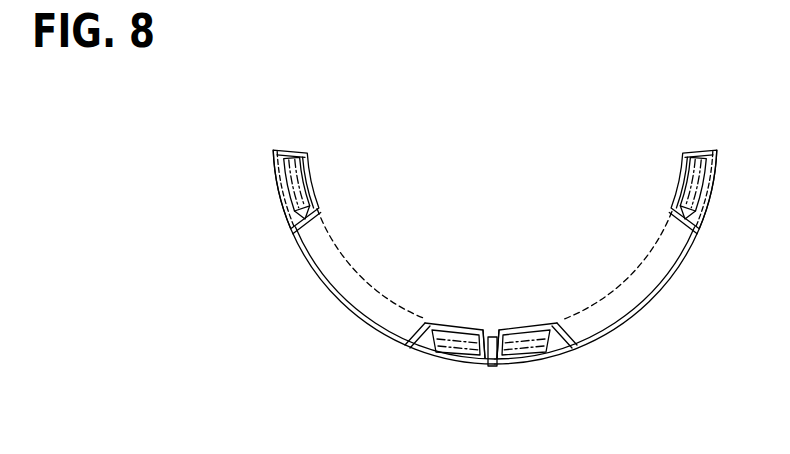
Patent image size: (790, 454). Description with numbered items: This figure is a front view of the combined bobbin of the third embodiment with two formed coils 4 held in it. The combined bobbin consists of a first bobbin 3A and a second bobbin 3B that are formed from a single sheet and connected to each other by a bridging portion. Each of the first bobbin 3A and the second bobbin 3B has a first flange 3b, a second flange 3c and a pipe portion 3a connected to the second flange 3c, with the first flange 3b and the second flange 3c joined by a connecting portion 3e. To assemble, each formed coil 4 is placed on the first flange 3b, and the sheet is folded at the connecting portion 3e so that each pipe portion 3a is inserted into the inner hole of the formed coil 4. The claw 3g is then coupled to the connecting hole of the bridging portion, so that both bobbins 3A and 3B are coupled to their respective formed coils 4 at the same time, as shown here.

The first bobbin 3A is at (672, 276).
The second bobbin 3B is at (350, 312).
The pipe portion 3a is at (323, 222).
The first flange 3b is at (433, 361).
The second flange 3c is at (510, 325).
The connecting portion 3e is at (283, 151).
The claw 3g is at (494, 367).
The formed coil 4 is at (306, 176).